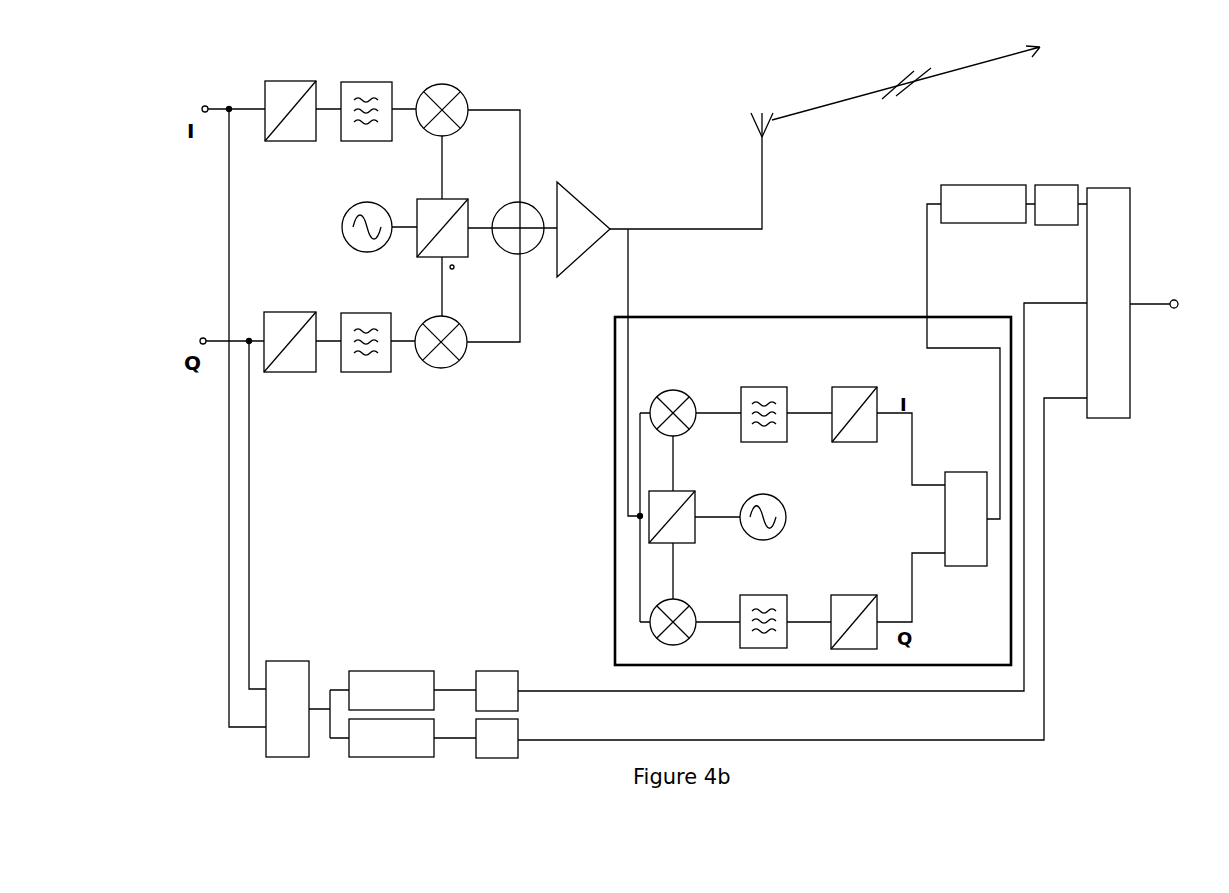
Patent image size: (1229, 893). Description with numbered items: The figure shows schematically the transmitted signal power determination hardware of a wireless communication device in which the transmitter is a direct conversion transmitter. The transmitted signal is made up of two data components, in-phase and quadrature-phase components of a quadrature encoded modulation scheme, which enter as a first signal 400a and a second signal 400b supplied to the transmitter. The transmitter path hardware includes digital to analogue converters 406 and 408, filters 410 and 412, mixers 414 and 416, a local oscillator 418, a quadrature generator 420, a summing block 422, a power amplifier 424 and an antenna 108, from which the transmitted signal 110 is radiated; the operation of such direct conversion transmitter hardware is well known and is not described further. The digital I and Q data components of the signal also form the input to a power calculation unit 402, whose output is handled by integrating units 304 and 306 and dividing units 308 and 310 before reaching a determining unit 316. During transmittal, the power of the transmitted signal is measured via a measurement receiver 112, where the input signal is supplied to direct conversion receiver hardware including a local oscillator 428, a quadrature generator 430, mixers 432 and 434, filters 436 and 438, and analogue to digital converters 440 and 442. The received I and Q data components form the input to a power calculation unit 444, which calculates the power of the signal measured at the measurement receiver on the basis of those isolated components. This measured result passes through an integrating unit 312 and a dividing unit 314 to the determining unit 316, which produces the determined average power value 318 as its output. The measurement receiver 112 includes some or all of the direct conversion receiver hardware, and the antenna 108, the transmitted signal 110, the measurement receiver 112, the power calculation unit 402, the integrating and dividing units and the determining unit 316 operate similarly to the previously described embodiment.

The first signal 400a is at (180, 81).
The second signal 400b is at (179, 313).
The digital to analogue converter 406 is at (305, 85).
The digital to analogue converter 408 is at (304, 316).
The filter 410 is at (381, 85).
The filter 412 is at (381, 316).
The mixer 414 is at (461, 86).
The mixer 416 is at (460, 317).
The local oscillator 418 is at (384, 201).
The quadrature generator 420 is at (464, 208).
The summing block 422 is at (534, 201).
The power amplifier 424 is at (595, 212).
The antenna 108 is at (736, 155).
The transmitted signal 110 is at (895, 83).
The measurement receiver 112 is at (781, 491).
The local oscillator 428 is at (780, 494).
The quadrature generator 430 is at (691, 494).
The mixer 432 is at (690, 389).
The mixer 434 is at (689, 596).
The filter 436 is at (776, 391).
The filter 438 is at (775, 596).
The analogue to digital converter 440 is at (861, 391).
The analogue to digital converter 442 is at (860, 597).
The power calculation unit 444 is at (966, 519).
The integrating unit 312 is at (983, 204).
The dividing unit 314 is at (1056, 205).
The determining unit 316 is at (1108, 303).
The determined average power value 318 is at (1196, 264).
The power calculation unit 402 is at (287, 709).
The integrating unit 304 is at (391, 690).
The integrating unit 306 is at (391, 738).
The dividing unit 308 is at (497, 691).
The dividing unit 310 is at (497, 738).